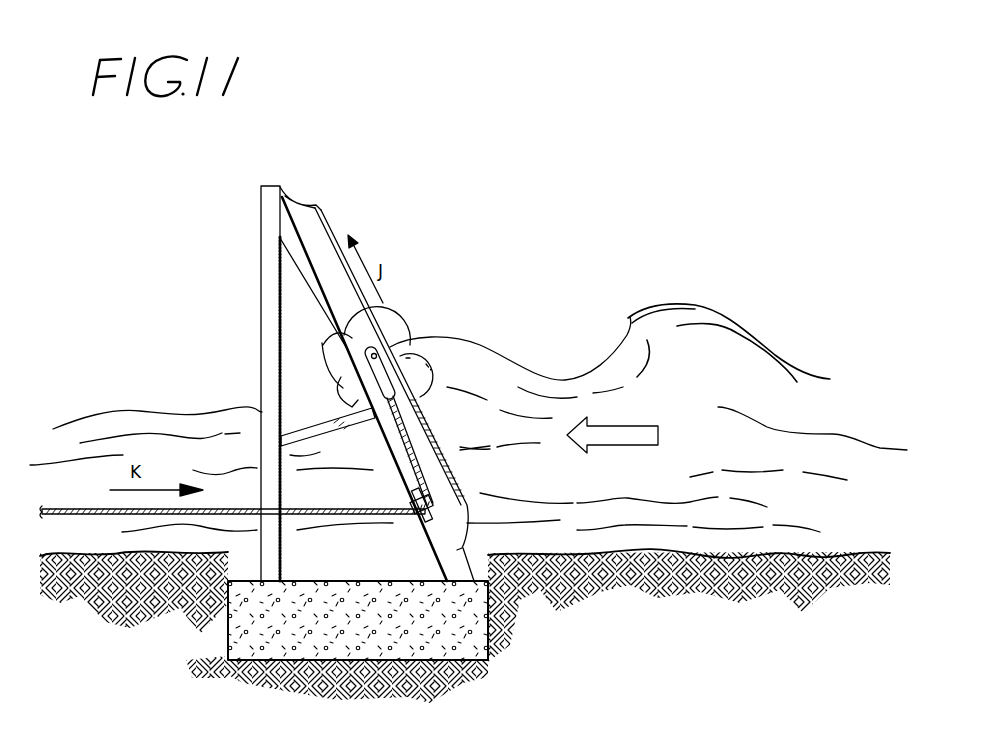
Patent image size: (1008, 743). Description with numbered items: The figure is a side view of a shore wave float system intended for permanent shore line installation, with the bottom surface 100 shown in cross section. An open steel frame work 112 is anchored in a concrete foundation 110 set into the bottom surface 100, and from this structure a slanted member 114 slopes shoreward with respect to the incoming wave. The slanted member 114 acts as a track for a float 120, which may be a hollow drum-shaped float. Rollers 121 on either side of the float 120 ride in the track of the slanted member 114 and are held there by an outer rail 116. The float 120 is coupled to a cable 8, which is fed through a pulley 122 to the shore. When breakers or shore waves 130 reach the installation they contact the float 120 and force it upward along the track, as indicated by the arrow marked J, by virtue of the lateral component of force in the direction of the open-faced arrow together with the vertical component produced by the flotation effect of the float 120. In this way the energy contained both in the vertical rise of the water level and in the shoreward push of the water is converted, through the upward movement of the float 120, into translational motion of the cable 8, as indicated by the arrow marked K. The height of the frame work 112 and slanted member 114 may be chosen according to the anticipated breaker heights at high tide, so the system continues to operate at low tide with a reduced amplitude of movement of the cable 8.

The cable 8 is at (70, 509).
The bottom surface 100 is at (673, 580).
The concrete foundation 110 is at (228, 641).
The open steel frame work 112 is at (230, 297).
The slanted member 114 is at (306, 248).
The outer rail 116 is at (319, 203).
The float 120 is at (405, 327).
The rollers 121 is at (338, 344).
The pulley 122 is at (423, 518).
The shore waves 130 is at (513, 368).